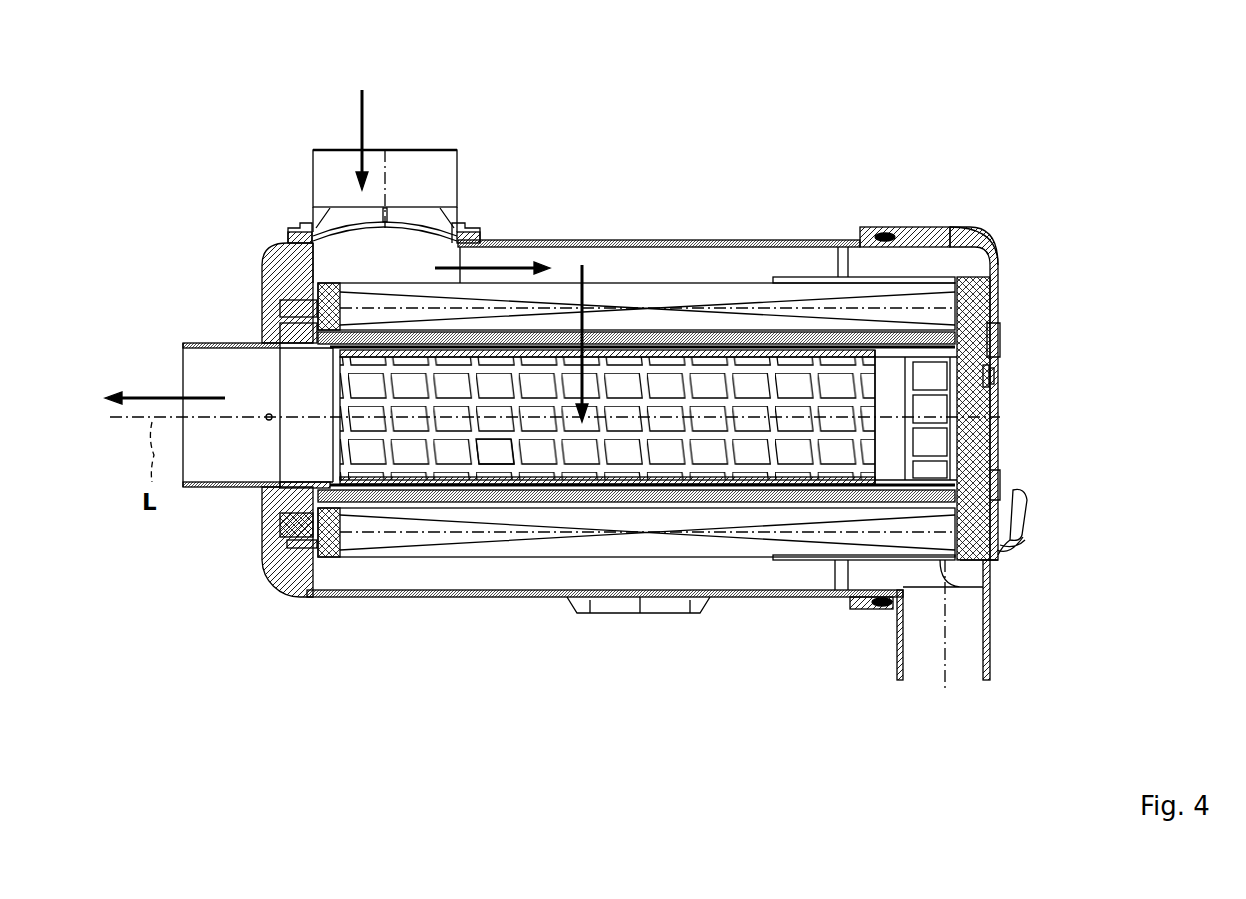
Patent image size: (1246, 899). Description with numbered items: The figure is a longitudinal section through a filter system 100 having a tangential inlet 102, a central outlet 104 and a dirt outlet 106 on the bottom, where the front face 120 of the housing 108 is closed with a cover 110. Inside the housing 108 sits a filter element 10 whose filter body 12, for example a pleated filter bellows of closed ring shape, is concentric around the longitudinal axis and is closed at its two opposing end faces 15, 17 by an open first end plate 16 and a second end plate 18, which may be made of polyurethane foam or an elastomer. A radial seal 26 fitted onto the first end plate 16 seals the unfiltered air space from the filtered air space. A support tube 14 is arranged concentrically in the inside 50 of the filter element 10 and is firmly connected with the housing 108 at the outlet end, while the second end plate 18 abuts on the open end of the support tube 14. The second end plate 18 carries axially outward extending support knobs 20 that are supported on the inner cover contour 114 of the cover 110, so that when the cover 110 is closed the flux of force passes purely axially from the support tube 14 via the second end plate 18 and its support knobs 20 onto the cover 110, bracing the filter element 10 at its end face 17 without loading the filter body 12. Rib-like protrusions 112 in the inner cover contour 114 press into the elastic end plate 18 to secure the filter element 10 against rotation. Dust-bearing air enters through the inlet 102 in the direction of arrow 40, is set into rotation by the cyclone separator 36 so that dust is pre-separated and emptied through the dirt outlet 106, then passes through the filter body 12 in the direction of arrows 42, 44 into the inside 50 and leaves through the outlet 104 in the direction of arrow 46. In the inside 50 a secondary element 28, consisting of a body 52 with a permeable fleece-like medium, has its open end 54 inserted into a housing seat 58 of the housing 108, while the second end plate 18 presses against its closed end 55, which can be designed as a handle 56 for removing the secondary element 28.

The filter element 10 is at (648, 268).
The filter body 12 is at (715, 295).
The support tube 14 is at (435, 487).
The end face 15 is at (289, 551).
The first end plate 16 is at (296, 570).
The end face 17 is at (1008, 343).
The second end plate 18 is at (1011, 430).
The support knobs 20 is at (1000, 482).
The radial seal 26 is at (280, 528).
The secondary element 28 is at (750, 511).
The cyclone separator 36 is at (350, 257).
The arrow 40 is at (360, 108).
The arrow 42 is at (505, 266).
The arrow 44 is at (585, 285).
The arrow 46 is at (157, 395).
The inside of the filter element 50 is at (495, 455).
The body 52 is at (792, 480).
The open end 54 is at (277, 355).
The closed end 55 is at (960, 378).
The handle 56 is at (1040, 375).
The housing seat 58 is at (285, 482).
The filter system 100 is at (1150, 168).
The tangential inlet 102 is at (410, 163).
The central outlet 104 is at (210, 338).
The dirt outlet 106 is at (920, 667).
The housing 108 is at (778, 240).
The cover 110 is at (1005, 265).
The protrusions 112 is at (1030, 500).
The inner cover contour 114 is at (1015, 542).
The front face 120 is at (1062, 297).